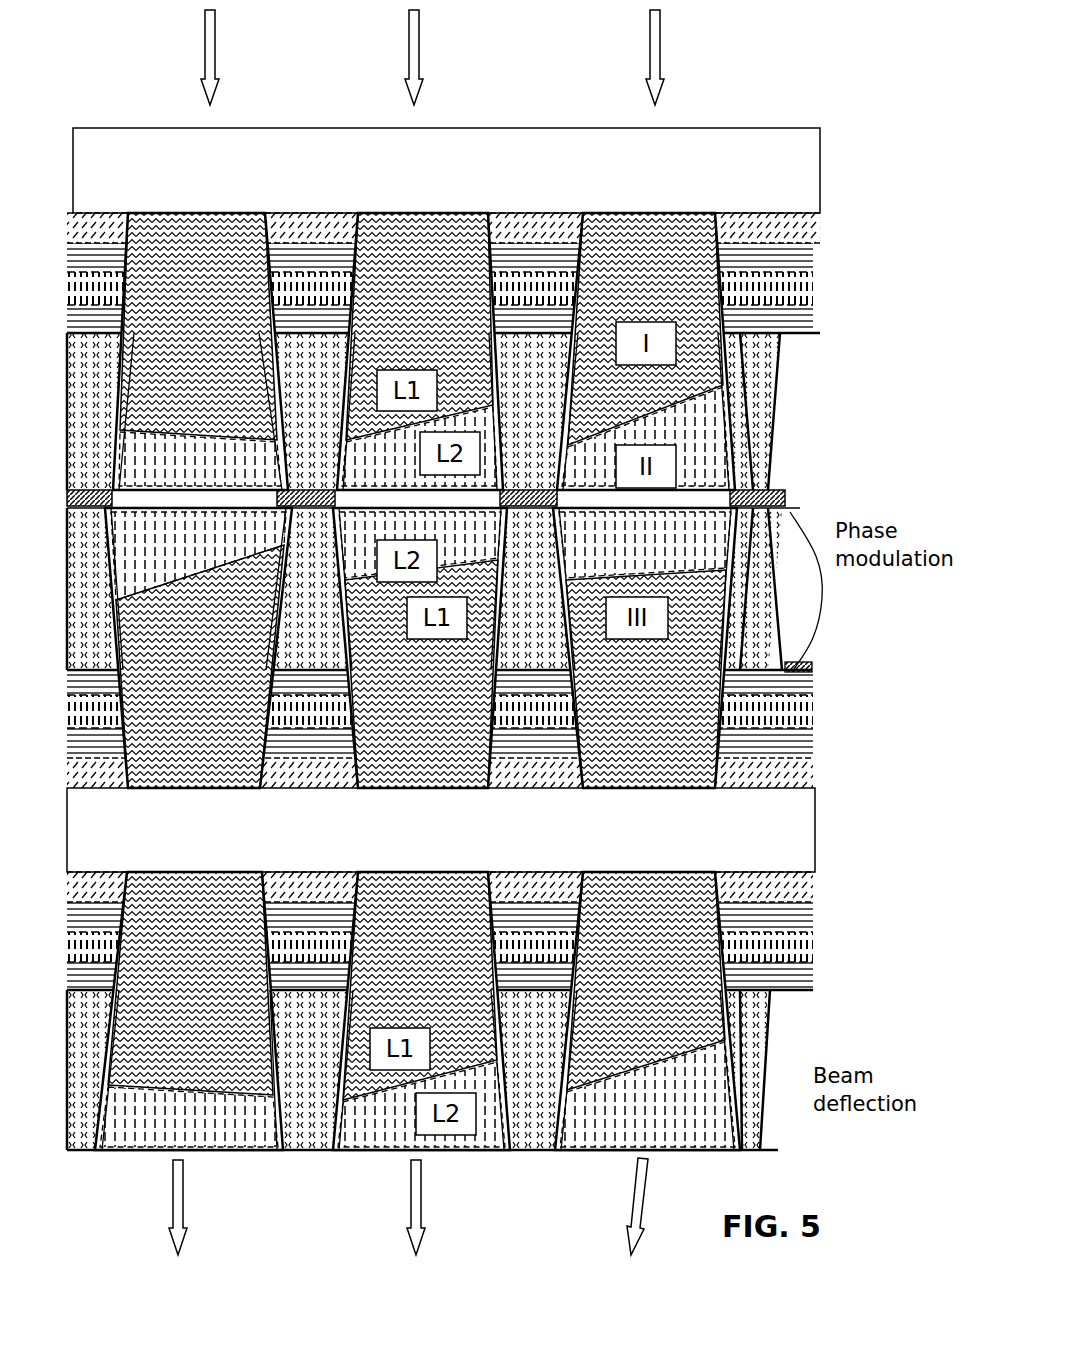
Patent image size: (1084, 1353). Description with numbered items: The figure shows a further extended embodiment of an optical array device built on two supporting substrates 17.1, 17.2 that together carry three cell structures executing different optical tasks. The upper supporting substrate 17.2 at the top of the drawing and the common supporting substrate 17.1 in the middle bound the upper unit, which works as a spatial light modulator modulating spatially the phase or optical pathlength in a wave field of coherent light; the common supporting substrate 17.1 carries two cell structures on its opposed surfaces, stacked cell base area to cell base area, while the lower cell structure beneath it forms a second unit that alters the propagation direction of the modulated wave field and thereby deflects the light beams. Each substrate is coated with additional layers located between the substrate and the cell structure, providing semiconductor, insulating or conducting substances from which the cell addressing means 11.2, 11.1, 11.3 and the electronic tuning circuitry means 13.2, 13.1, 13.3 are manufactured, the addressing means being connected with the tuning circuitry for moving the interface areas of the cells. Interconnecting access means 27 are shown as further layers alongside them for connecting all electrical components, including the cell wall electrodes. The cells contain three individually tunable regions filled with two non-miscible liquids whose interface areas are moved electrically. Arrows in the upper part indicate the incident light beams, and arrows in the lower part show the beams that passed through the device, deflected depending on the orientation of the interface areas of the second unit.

The supporting substrate 17.2 is at (806, 198).
The cell addressing means 11.2 is at (806, 233).
The interconnecting access means 27 is at (806, 263).
The electronic tuning circuitry means 13.2 is at (806, 291).
The electronic tuning circuitry means 13.1 is at (795, 722).
The cell addressing means 11.1 is at (795, 778).
The supporting substrate 17.1 is at (798, 856).
The cell addressing means 11.3 is at (800, 890).
The electronic tuning circuitry means 13.3 is at (800, 946).